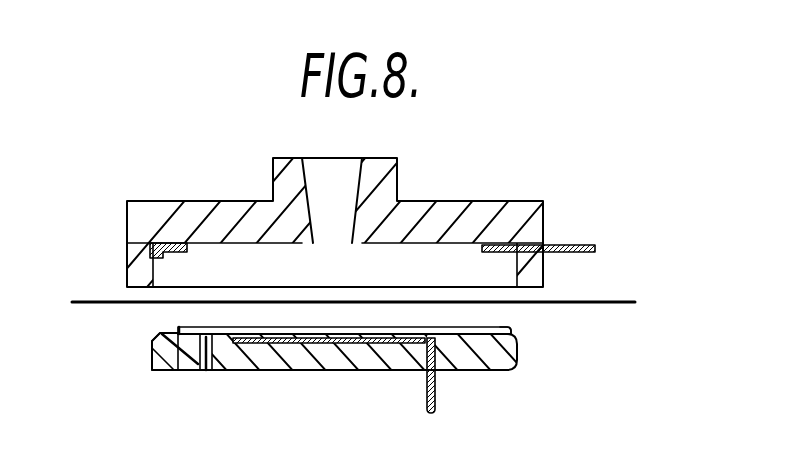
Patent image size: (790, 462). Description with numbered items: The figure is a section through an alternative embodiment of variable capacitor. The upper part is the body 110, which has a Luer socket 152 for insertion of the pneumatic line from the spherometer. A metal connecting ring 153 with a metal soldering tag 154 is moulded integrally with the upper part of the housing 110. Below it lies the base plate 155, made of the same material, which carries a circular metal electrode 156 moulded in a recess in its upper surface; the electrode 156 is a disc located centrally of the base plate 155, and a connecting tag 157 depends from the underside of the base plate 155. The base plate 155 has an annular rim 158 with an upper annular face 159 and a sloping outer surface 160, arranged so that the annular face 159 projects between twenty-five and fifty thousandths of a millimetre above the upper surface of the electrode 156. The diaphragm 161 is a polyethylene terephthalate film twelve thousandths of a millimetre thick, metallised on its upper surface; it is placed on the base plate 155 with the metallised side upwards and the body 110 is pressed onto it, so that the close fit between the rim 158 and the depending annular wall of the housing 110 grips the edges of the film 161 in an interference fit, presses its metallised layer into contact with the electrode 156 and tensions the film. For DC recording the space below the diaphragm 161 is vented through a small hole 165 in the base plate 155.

The body 110 is at (412, 201).
The Luer socket 152 is at (330, 195).
The metal connecting ring 153 is at (150, 263).
The metal soldering tag 154 is at (577, 242).
The base plate 155 is at (505, 353).
The circular metal electrode 156 is at (340, 371).
The connecting tag 157 is at (438, 393).
The annular rim 158 is at (508, 328).
The upper annular face 159 is at (178, 330).
The sloping outer surface 160 is at (160, 334).
The diaphragm 161 is at (598, 302).
The small hole 165 is at (205, 371).